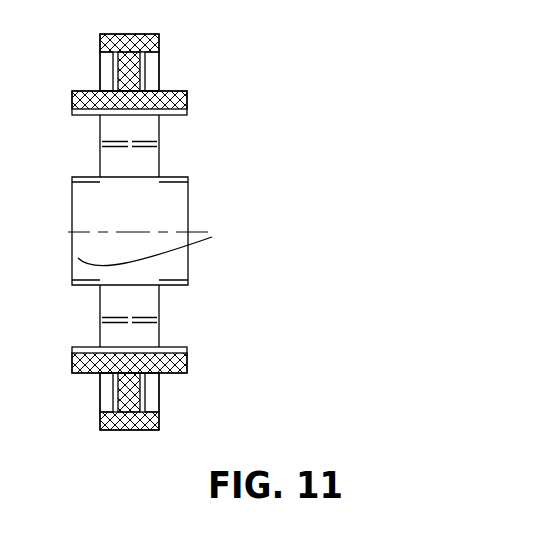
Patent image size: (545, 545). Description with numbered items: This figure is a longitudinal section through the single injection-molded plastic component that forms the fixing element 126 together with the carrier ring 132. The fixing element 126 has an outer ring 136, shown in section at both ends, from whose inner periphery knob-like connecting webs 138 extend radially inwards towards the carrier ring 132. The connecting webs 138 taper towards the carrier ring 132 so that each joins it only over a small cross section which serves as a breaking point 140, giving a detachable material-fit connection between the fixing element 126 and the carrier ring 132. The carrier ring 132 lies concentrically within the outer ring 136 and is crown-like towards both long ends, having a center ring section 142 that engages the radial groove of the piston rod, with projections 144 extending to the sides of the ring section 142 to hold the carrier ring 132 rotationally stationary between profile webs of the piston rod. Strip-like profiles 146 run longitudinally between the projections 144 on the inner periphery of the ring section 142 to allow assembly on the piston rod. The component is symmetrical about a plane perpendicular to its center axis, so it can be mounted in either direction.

The fixing element 126 is at (159, 37).
The carrier ring 132 is at (156, 112).
The outer ring 136 is at (157, 418).
The connecting webs 138 is at (145, 77).
The breaking point 140 is at (118, 90).
The ring section 142 is at (137, 298).
The projections 144 is at (173, 115).
The strip-like profiles 146 is at (126, 149).